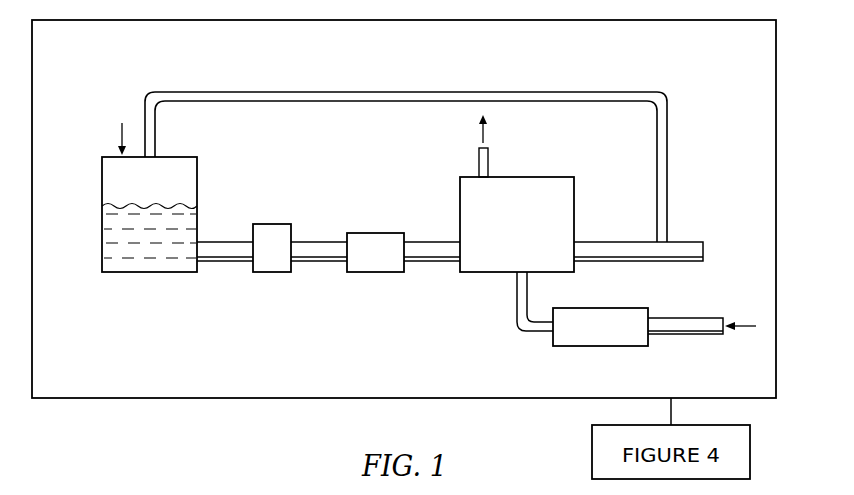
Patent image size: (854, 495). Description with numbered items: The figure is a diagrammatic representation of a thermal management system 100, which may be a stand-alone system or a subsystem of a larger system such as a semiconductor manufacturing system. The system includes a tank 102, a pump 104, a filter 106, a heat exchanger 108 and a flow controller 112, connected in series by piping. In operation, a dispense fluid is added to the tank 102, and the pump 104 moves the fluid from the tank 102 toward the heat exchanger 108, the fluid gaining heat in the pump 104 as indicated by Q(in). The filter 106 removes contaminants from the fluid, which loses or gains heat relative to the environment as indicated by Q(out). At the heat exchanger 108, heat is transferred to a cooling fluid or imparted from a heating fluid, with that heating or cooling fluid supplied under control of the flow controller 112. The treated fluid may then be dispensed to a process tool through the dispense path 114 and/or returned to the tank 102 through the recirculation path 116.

The thermal management system 100 is at (527, 74).
The tank 102 is at (102, 185).
The pump 104 is at (268, 224).
The filter 106 is at (371, 232).
The heat exchanger 108 is at (540, 176).
The flow controller 112 is at (617, 347).
The dispense path 114 is at (704, 249).
The recirculation path 116 is at (270, 92).